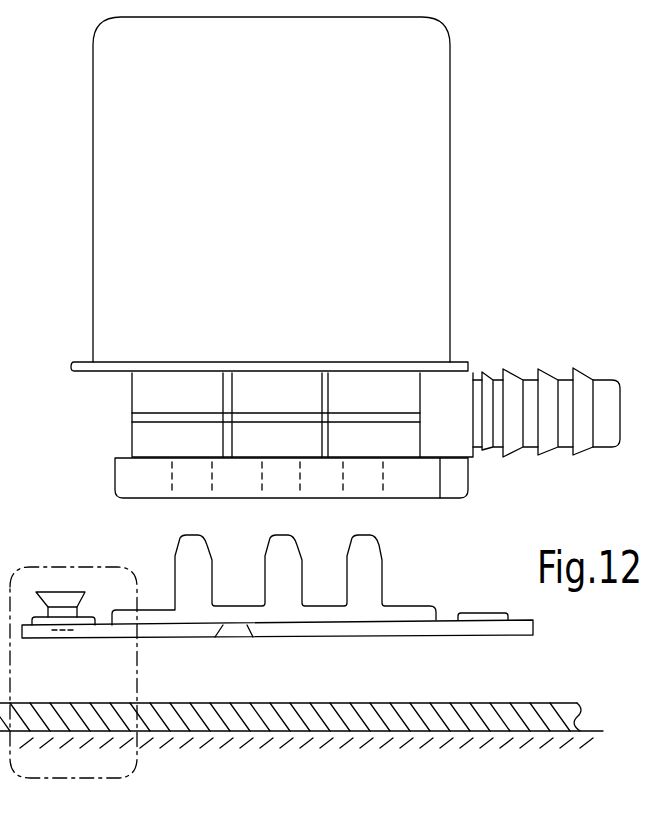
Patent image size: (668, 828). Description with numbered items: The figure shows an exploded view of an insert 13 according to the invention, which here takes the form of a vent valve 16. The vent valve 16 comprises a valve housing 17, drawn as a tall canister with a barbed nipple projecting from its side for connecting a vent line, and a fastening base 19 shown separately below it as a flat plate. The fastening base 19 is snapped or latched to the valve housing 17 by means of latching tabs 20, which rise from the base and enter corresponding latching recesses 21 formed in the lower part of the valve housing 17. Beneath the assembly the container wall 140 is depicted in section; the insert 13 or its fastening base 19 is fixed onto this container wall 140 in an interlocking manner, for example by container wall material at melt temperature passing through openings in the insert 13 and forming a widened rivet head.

The vent valve 16 is at (70, 248).
The valve housing 17 is at (438, 170).
The insert 13 is at (545, 441).
The latching recesses 21 is at (187, 478).
The fastening base 19 is at (417, 626).
The latching tabs 20 is at (188, 563).
The container wall 140 is at (438, 733).